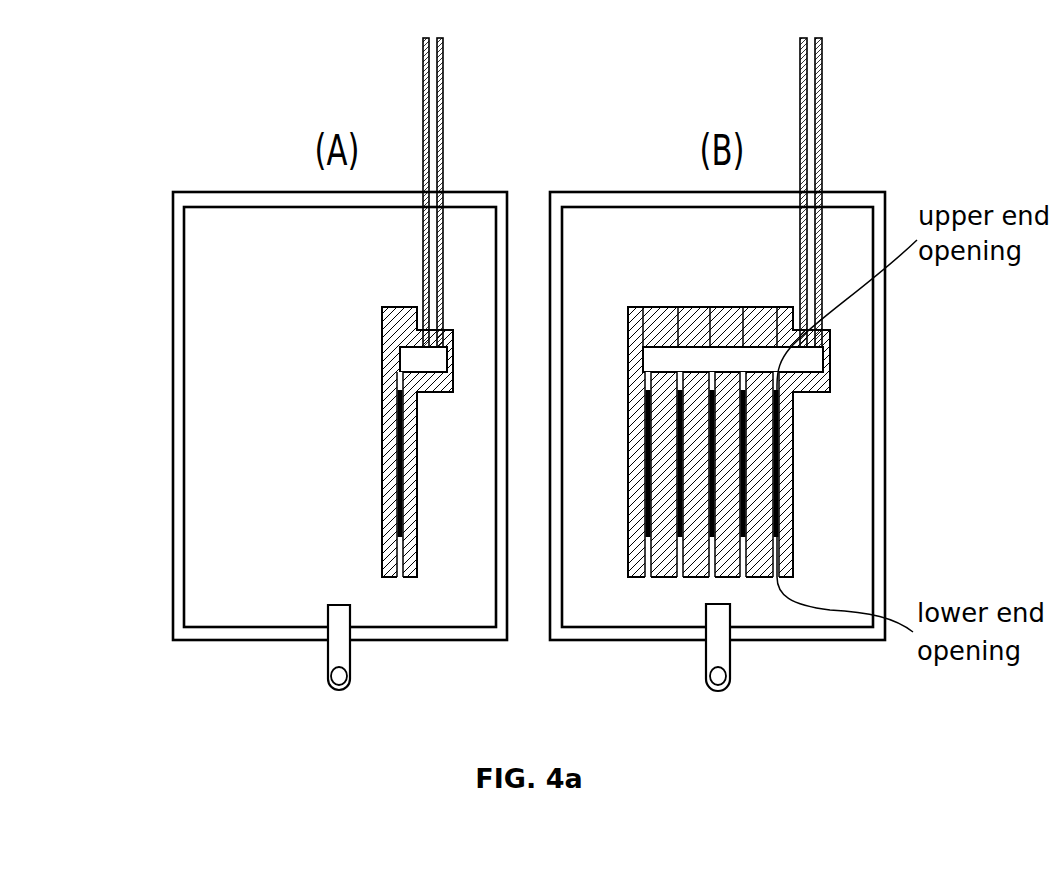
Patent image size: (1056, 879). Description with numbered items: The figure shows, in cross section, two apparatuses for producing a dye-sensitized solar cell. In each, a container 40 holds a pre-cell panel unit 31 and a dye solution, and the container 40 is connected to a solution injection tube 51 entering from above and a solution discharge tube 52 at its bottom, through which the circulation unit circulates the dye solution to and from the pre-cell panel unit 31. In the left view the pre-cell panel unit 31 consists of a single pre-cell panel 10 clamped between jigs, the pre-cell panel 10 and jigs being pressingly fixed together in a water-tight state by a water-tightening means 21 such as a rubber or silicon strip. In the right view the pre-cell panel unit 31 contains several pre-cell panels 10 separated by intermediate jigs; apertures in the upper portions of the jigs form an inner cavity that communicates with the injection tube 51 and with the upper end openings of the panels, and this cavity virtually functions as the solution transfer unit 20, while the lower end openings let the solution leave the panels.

The pre-cell panel 10 is at (391, 485).
The solution transfer unit 20 is at (375, 307).
The water-tightening means 21 is at (415, 409).
The pre-cell panel unit 31 is at (426, 523).
The container 40 is at (165, 440).
The solution injection tube 51 is at (454, 134).
The solution discharge tube 52 is at (363, 655).